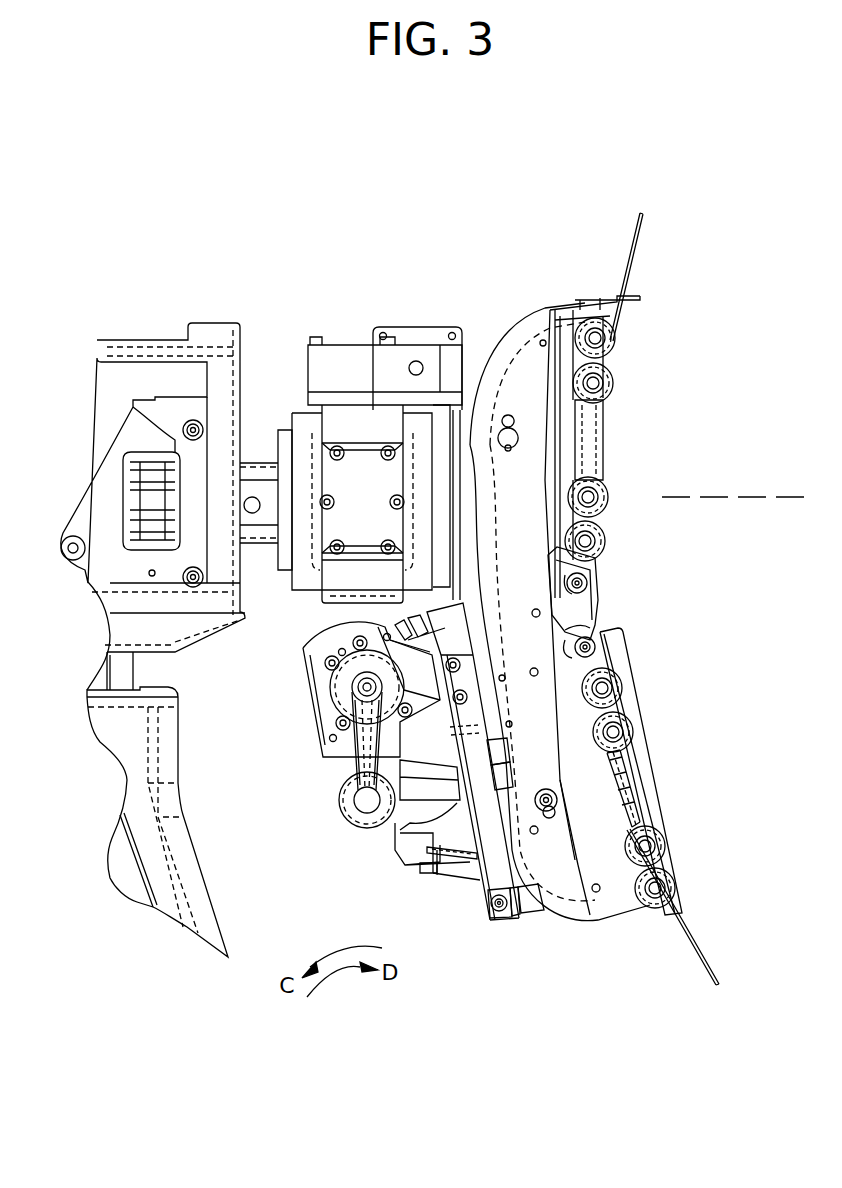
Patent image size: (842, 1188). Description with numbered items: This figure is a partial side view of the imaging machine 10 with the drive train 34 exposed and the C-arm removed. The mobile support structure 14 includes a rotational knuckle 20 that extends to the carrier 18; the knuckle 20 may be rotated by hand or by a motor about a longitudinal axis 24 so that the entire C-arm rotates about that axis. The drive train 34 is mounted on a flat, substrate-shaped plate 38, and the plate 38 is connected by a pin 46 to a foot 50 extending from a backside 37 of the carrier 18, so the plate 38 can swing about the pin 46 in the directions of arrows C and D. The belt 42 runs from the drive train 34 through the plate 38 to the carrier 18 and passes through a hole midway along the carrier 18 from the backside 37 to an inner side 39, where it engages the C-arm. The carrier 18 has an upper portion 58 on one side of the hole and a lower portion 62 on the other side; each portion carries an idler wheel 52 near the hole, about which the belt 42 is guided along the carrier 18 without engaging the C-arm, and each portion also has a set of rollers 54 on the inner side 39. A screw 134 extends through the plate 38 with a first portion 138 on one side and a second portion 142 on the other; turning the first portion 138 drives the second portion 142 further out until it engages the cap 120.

The imaging machine 10 is at (82, 188).
The mobile support structure 14 is at (93, 520).
The carrier 18 is at (513, 320).
The rotational knuckle 20 is at (330, 425).
The longitudinal axis 24 is at (750, 473).
The drive train 34 is at (360, 923).
The backside 37 is at (530, 906).
The plate 38 is at (468, 872).
The inner side 39 is at (623, 622).
The belt 42 is at (705, 933).
The pin 46 is at (500, 918).
The foot 50 is at (530, 912).
The idler wheel 52 is at (552, 590).
The rollers 54 is at (574, 388).
The upper portion 58 is at (625, 593).
The lower portion 62 is at (624, 640).
The cap 120 is at (517, 767).
The screw 134 is at (500, 748).
The first portion 138 is at (405, 860).
The second portion 142 is at (510, 775).